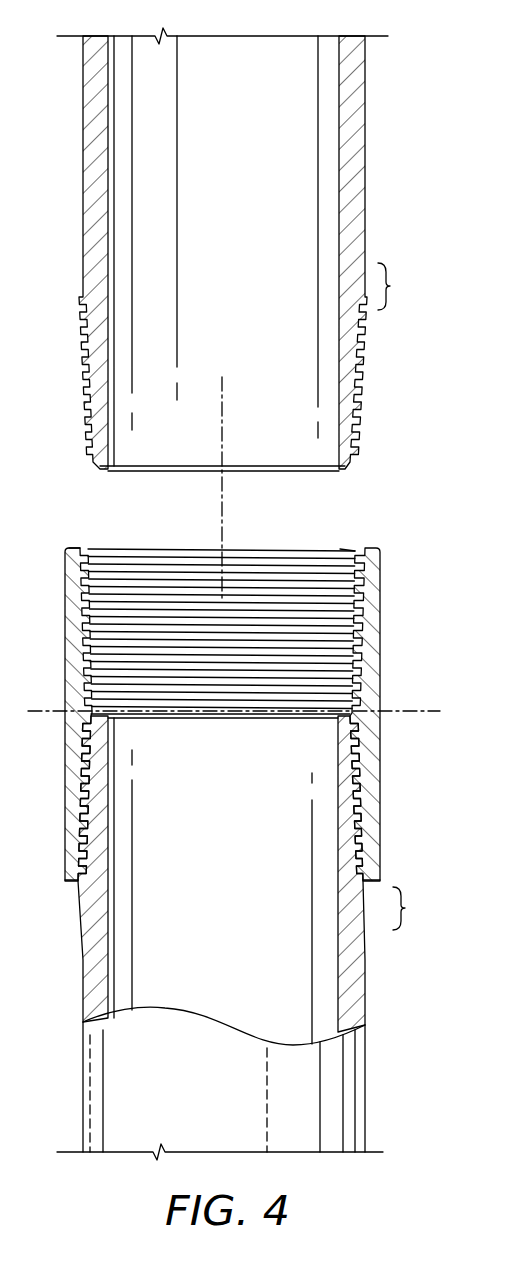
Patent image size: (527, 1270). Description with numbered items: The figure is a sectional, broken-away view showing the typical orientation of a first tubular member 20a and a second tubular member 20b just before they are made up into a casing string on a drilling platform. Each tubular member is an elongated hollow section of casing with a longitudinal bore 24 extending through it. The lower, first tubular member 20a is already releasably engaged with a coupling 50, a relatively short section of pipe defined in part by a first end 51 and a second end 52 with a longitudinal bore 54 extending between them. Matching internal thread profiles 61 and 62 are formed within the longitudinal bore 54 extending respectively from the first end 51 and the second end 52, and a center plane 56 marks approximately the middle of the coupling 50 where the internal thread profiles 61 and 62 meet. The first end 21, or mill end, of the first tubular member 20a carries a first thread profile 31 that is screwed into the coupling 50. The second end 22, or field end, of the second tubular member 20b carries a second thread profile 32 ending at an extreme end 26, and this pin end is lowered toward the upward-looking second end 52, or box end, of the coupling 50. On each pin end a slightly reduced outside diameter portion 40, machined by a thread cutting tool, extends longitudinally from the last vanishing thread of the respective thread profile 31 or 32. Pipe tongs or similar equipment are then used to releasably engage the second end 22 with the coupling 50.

The second end 22 is at (381, 97).
The second tubular member 20b is at (260, 282).
The first tubular member 20a is at (231, 937).
The longitudinal bore 24 is at (232, 331).
The reduced outside diameter portion 40 is at (405, 596).
The second thread profile 32 is at (366, 394).
The first thread profile 31 is at (362, 764).
The extreme end 26 is at (98, 474).
The first end 21 is at (338, 752).
The coupling 50 is at (190, 711).
The second end 52 is at (78, 548).
The first end 51 is at (78, 881).
The longitudinal bore 54 is at (235, 648).
The center plane 56 is at (40, 710).
The internal thread profile 61 is at (81, 758).
The internal thread profile 62 is at (345, 558).